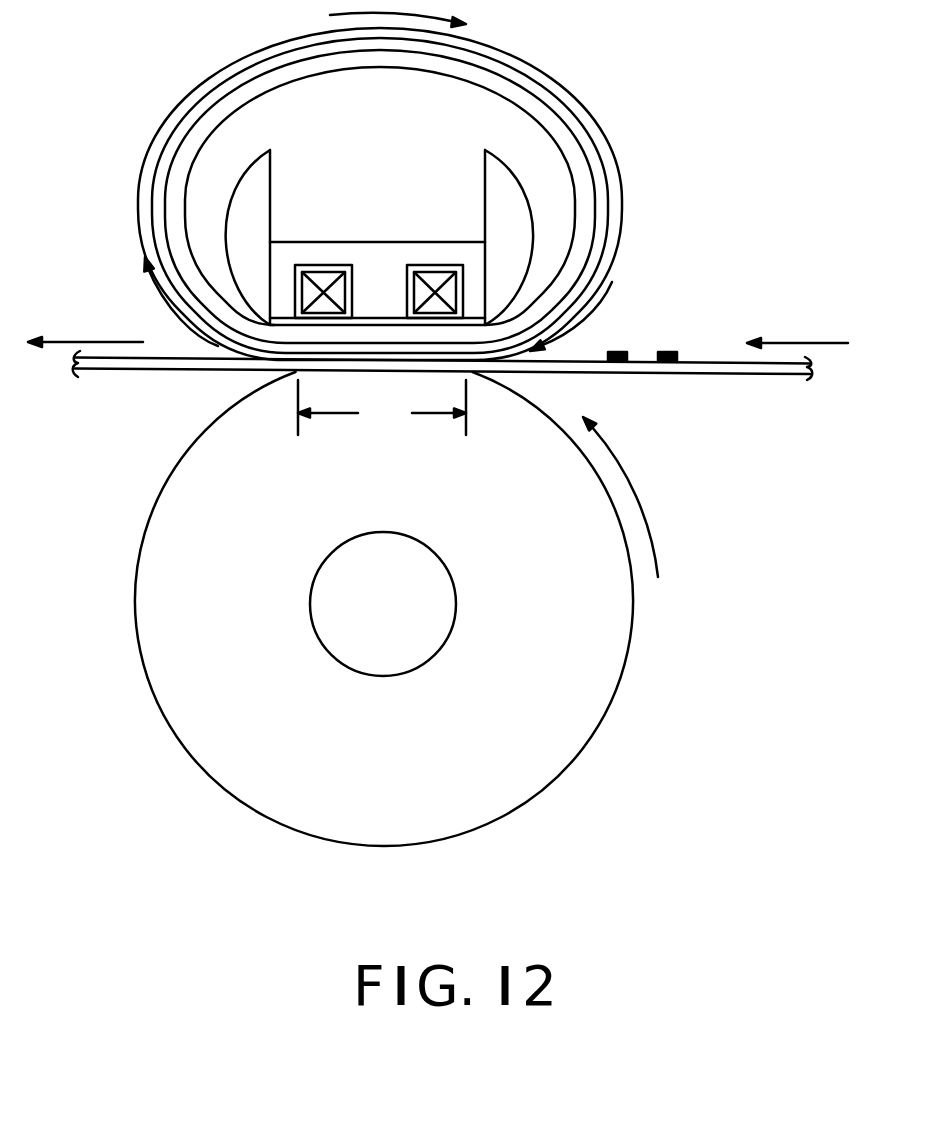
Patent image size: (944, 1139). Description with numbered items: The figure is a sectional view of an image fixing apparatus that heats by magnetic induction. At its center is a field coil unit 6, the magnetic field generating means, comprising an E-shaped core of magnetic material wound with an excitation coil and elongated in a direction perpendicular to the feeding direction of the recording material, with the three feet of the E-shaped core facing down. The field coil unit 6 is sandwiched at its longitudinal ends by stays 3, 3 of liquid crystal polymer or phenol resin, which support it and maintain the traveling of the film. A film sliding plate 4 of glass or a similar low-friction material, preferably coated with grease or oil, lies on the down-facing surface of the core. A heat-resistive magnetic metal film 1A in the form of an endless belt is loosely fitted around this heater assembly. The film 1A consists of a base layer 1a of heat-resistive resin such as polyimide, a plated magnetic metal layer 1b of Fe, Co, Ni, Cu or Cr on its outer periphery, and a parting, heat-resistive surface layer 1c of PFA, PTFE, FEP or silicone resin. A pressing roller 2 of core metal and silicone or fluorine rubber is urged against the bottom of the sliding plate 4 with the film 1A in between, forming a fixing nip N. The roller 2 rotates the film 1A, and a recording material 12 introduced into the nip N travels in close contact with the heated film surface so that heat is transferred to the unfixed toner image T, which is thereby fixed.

The magnetic metal film 1A is at (442, 186).
The base layer 1a is at (592, 130).
The magnetic metal layer 1b is at (603, 180).
The surface layer 1c is at (614, 211).
The pressing roller 2 is at (618, 660).
The stay 3 is at (252, 207).
The film sliding plate 4 is at (270, 324).
The field coil unit 6 is at (399, 258).
The recording material 12 is at (745, 374).
The unfixed toner image T is at (667, 352).
The nip N is at (382, 407).